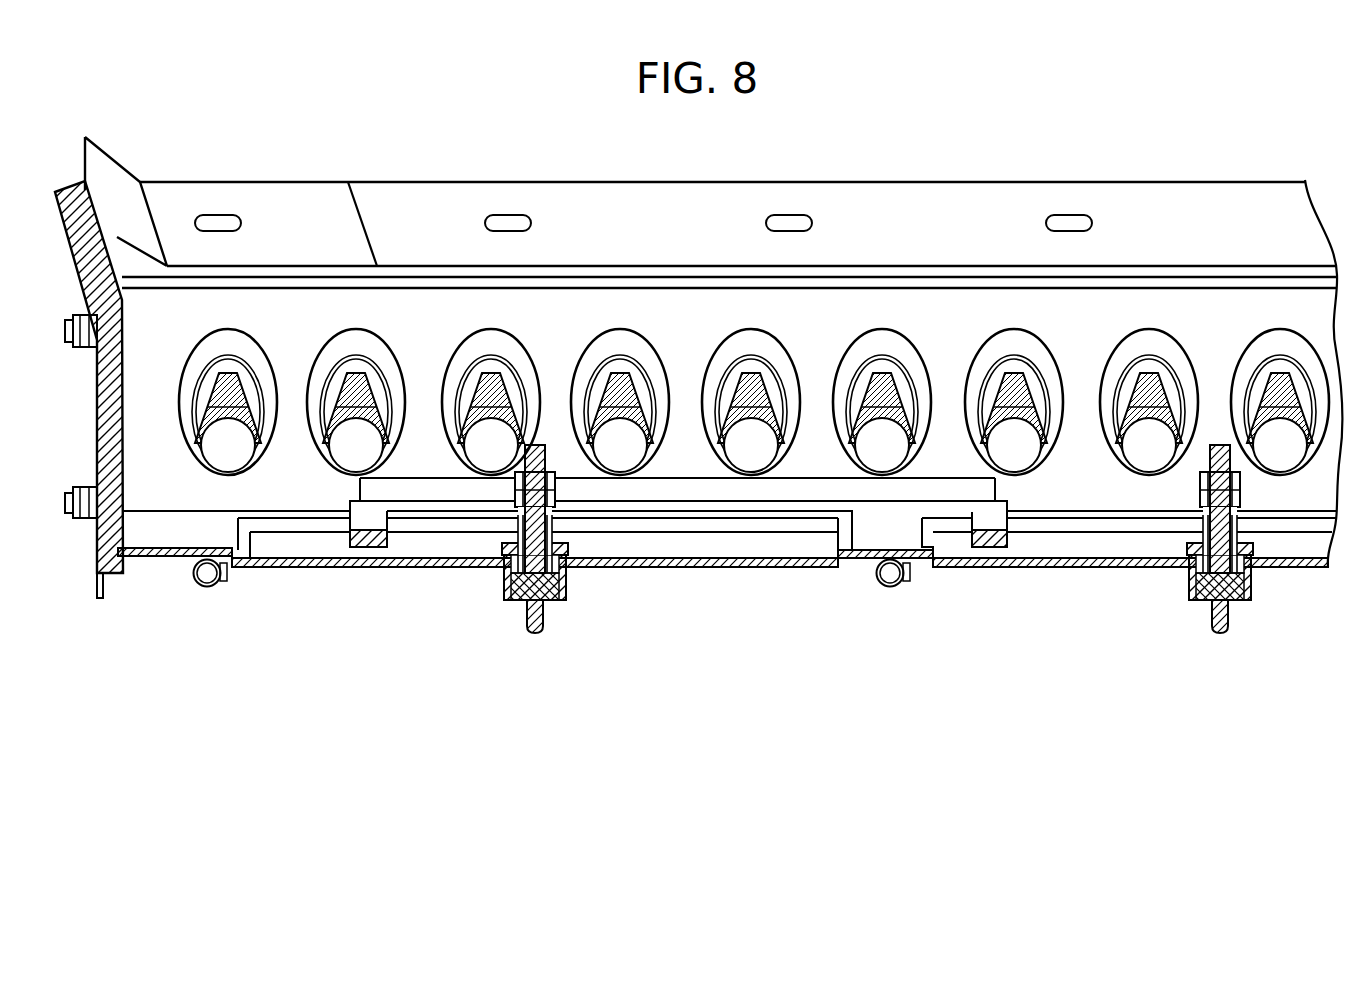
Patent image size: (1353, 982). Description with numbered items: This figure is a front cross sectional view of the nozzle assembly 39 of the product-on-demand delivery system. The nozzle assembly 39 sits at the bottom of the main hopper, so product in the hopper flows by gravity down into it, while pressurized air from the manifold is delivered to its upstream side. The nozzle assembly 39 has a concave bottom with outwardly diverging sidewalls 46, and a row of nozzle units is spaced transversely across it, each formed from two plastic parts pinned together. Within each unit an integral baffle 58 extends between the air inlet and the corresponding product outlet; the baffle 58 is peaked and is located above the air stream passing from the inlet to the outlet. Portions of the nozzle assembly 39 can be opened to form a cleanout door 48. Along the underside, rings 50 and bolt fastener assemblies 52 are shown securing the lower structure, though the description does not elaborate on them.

The nozzle assembly 39 is at (132, 415).
The outwardly diverging sidewalls 46 is at (403, 332).
The cleanout door 48 is at (395, 568).
The guide ring 50 is at (206, 588).
The bolt fastener assembly 52 is at (500, 631).
The integral baffle 58 is at (356, 372).